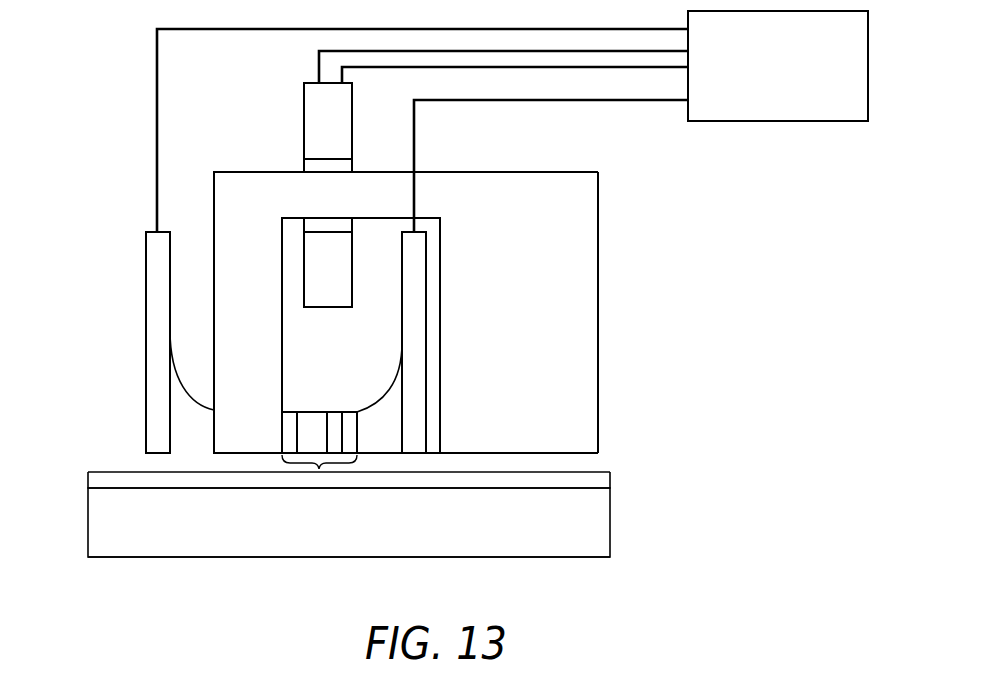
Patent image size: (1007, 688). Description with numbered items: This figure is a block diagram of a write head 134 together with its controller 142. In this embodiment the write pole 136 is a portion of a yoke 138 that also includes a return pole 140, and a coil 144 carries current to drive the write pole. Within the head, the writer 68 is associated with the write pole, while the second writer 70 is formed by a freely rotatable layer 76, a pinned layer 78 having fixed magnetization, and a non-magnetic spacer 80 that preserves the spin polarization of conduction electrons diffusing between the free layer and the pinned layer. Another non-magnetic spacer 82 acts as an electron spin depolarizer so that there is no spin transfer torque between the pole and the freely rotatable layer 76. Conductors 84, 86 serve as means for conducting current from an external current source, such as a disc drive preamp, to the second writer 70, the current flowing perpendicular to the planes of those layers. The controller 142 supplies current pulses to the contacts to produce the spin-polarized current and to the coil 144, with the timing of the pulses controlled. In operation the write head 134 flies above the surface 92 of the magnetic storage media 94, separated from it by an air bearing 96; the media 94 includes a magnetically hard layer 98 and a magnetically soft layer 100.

The writer 68 is at (246, 455).
The second writer 70 is at (318, 469).
The freely rotatable layer 76 is at (313, 422).
The pinned layer 78 is at (350, 410).
The non-magnetic spacer 80 is at (338, 410).
The non-magnetic spacer 82 is at (288, 410).
The conductor 84 is at (153, 410).
The conductor 86 is at (405, 302).
The surface 92 is at (603, 470).
The magnetic storage media 94 is at (126, 582).
The air bearing 96 is at (128, 462).
The magnetically hard layer 98 is at (90, 485).
The magnetically soft layer 100 is at (100, 527).
The write head 134 is at (114, 327).
The write pole 136 is at (235, 353).
The yoke 138 is at (447, 181).
The return pole 140 is at (590, 297).
The controller 142 is at (785, 121).
The coil 144 is at (304, 128).